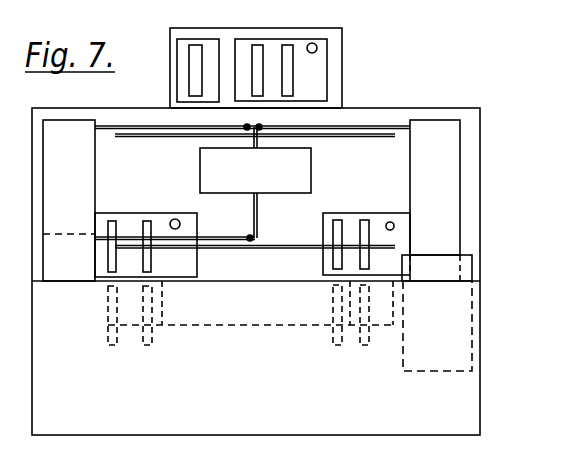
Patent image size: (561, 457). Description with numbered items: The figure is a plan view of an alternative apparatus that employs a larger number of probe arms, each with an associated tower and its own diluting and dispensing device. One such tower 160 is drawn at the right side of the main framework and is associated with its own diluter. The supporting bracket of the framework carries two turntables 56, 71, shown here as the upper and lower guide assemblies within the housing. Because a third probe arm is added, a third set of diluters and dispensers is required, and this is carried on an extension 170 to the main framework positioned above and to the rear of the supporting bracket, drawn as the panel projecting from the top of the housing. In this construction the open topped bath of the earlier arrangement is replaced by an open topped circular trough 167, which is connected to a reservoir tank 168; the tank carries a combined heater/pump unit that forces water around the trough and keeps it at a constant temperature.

The extension 170 is at (335, 79).
The turntable 56 is at (362, 133).
The turntable 71 is at (279, 244).
The tower 160 is at (452, 233).
The open topped circular trough 167 is at (389, 318).
The reservoir tank 168 is at (465, 363).